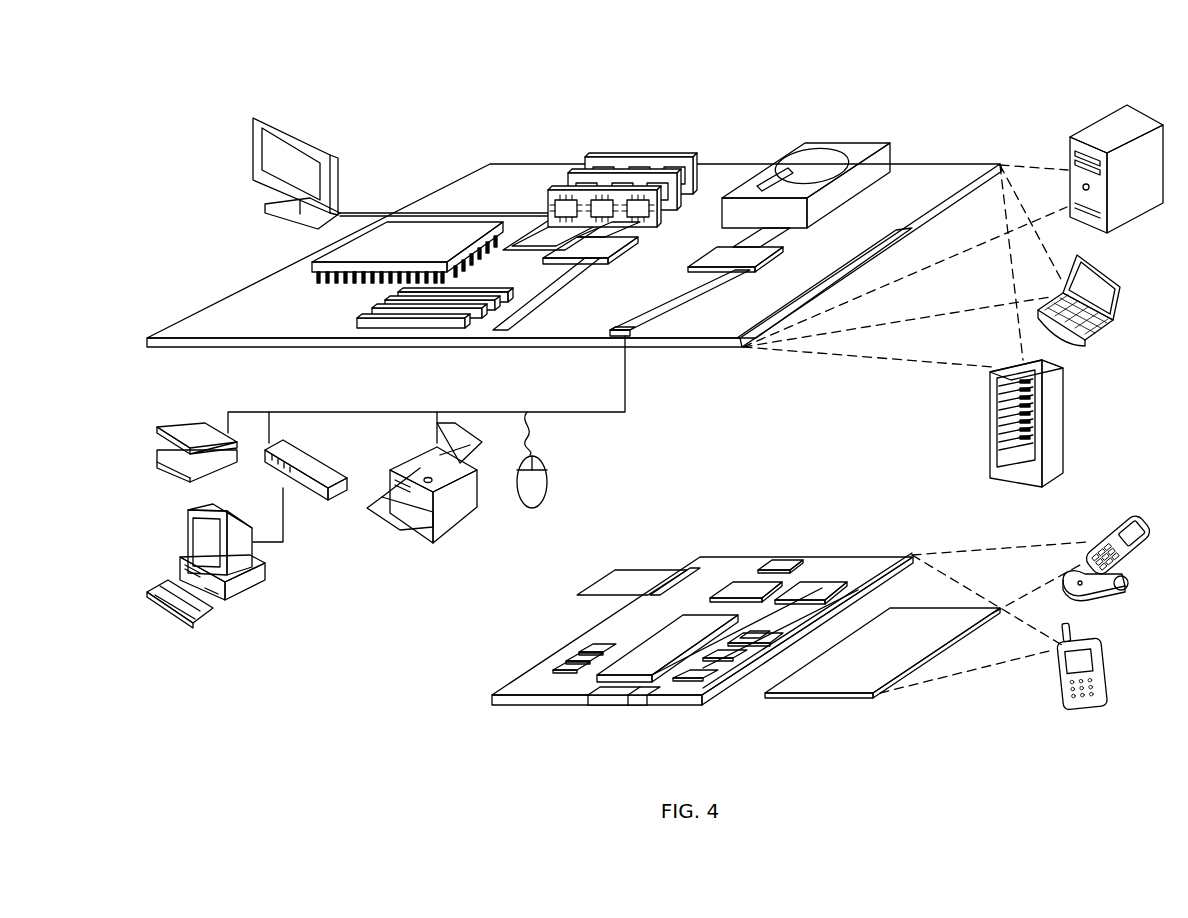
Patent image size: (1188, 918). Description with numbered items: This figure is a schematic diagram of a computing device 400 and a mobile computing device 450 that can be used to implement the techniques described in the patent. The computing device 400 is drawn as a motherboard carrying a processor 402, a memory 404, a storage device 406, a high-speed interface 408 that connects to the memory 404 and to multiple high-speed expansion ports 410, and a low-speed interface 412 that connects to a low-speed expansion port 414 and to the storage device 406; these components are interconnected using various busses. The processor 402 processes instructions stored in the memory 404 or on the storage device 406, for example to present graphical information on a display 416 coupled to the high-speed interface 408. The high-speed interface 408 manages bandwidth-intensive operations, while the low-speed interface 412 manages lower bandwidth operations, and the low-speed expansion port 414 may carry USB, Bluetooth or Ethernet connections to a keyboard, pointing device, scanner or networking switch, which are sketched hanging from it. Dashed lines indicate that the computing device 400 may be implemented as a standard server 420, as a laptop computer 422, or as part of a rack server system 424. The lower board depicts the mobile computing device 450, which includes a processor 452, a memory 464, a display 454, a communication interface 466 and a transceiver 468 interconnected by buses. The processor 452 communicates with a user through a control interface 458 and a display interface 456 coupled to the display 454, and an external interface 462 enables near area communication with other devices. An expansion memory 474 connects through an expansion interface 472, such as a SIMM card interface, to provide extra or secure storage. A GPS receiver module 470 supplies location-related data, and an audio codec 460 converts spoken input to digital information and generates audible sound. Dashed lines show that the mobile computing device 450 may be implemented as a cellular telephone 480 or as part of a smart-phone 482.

The computing device 400 is at (424, 141).
The processor 402 is at (312, 262).
The memory 404 is at (600, 160).
The storage device 406 is at (797, 145).
The high-speed interface 408 is at (572, 252).
The high-speed expansion ports 410 is at (372, 310).
The low-speed interface 412 is at (720, 253).
The low-speed expansion port 414 is at (632, 337).
The display 416 is at (256, 118).
The standard server 420 is at (1068, 153).
The laptop computer 422 is at (1130, 278).
The rack server system 424 is at (990, 446).
The mobile computing device 450 is at (470, 704).
The processor 452 is at (643, 668).
The display 454 is at (847, 683).
The display interface 456 is at (703, 680).
The control interface 458 is at (730, 658).
The audio codec 460 is at (752, 638).
The external interface 462 is at (613, 693).
The memory 464 is at (570, 663).
The communication interface 466 is at (747, 588).
The transceiver 468 is at (813, 587).
The GPS receiver module 470 is at (790, 557).
The expansion interface 472 is at (687, 568).
The expansion memory 474 is at (627, 572).
The cellular telephone 480 is at (1105, 526).
The smart-phone 482 is at (1060, 668).